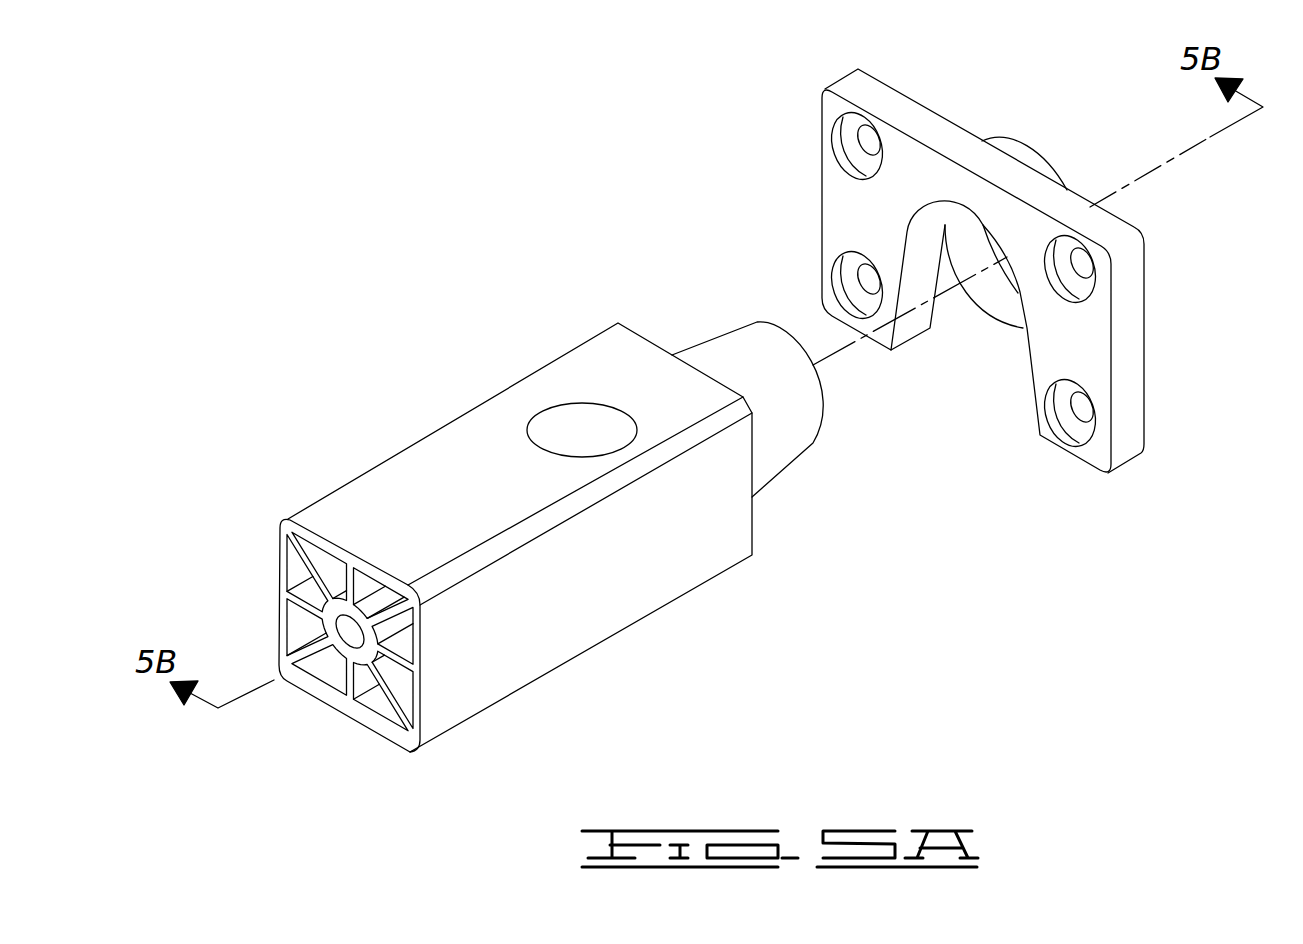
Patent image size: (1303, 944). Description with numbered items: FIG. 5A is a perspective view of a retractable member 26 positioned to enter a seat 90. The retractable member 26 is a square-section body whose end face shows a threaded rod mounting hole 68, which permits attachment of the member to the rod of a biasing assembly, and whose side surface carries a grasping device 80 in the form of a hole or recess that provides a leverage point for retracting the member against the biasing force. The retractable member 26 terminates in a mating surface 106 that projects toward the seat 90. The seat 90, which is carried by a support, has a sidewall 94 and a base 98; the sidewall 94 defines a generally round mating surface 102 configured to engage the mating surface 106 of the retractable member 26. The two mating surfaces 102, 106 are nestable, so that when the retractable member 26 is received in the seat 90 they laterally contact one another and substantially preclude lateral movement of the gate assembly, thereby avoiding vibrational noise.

The retractable member 26 is at (607, 641).
The threaded rod mounting hole 68 is at (350, 643).
The grasping device 80 is at (548, 425).
The seat 90 is at (1143, 367).
The sidewall 94 is at (1003, 307).
The base 98 is at (1031, 152).
The mating surface 102 is at (968, 262).
The mating surface 106 is at (715, 333).